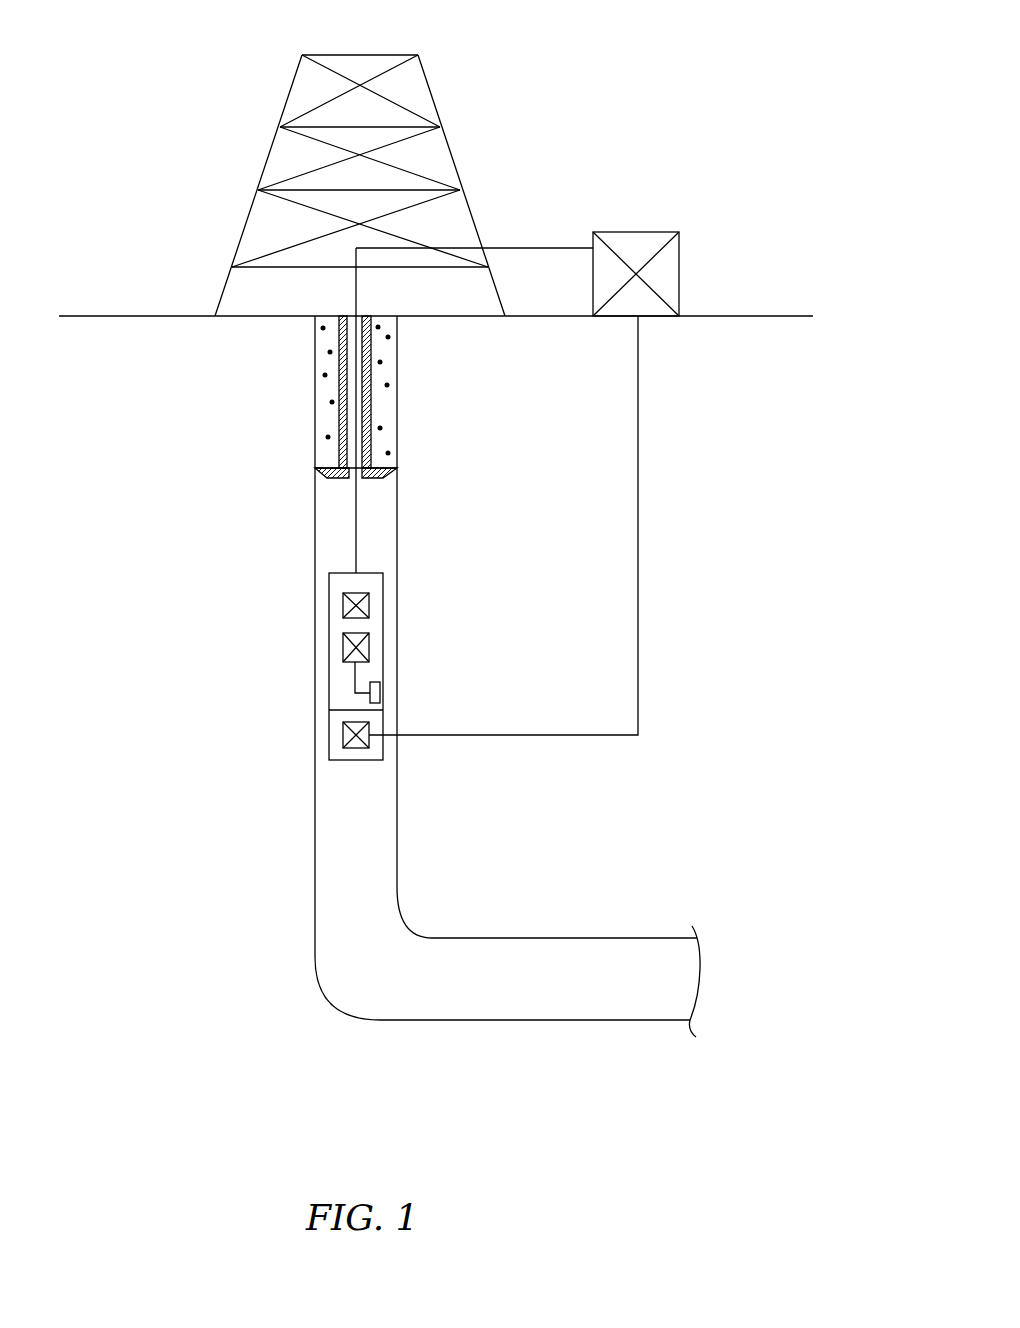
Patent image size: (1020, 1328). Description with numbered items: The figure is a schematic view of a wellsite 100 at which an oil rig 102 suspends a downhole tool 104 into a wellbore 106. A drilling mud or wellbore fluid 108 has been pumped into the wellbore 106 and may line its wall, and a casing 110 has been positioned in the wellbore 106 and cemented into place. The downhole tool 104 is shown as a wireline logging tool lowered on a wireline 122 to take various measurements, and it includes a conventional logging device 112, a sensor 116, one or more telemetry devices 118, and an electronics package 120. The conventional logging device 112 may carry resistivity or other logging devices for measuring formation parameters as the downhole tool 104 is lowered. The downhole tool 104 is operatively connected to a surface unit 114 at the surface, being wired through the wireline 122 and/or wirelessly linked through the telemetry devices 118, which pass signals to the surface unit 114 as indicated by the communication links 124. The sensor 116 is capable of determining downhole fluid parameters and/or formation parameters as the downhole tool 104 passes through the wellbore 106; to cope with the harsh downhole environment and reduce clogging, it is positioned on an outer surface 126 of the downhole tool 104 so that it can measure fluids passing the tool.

The wellsite 100 is at (782, 50).
The oil rig 102 is at (452, 140).
The downhole tool 104 is at (328, 604).
The wellbore 106 is at (397, 555).
The wellbore fluid 108 is at (390, 713).
The casing 110 is at (370, 400).
The conventional logging device 112 is at (369, 607).
The surface unit 114 is at (683, 258).
The sensor 116 is at (380, 690).
The telemetry device 118 is at (369, 740).
The electronics package 120 is at (369, 647).
The wireline 122 is at (368, 505).
The communication links 124 is at (640, 582).
The outer surface 126 is at (328, 687).